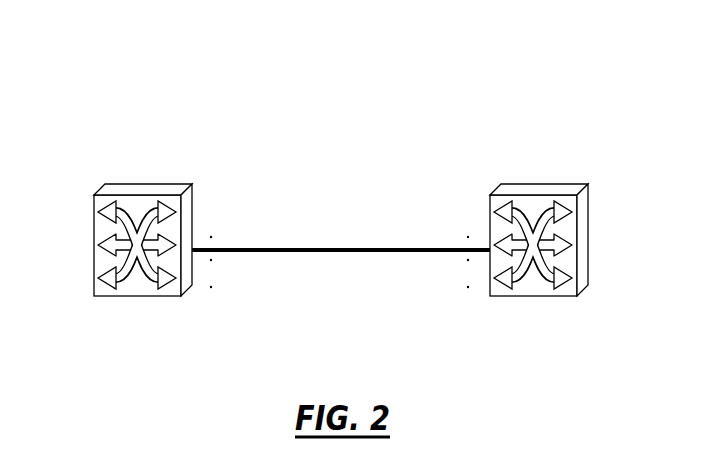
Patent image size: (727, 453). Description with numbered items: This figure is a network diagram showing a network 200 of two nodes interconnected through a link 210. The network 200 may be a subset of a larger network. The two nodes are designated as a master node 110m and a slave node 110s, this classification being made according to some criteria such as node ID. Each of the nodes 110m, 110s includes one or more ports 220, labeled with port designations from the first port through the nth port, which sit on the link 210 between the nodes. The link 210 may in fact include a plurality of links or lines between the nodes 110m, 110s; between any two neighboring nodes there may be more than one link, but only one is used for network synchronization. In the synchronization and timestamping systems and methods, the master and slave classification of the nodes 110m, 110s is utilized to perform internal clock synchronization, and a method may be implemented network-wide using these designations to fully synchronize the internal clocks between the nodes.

The network 200 is at (133, 93).
The master node 110m is at (137, 183).
The slave node 110s is at (557, 183).
The link 210 is at (337, 250).
The ports 220 is at (237, 160).